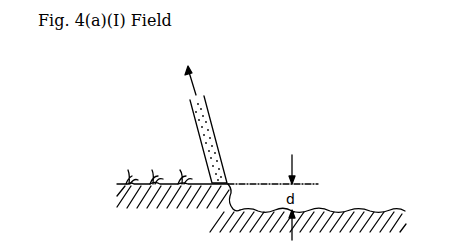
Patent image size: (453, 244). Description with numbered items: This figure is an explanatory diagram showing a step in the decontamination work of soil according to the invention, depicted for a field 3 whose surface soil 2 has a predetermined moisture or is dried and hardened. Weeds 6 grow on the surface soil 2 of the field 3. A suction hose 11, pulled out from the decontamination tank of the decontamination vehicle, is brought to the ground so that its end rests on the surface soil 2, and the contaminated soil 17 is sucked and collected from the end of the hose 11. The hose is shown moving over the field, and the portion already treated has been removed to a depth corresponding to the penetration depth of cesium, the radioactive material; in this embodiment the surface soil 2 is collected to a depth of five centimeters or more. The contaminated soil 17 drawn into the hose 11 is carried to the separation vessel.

The surface soil 2 is at (142, 193).
The field 3 is at (349, 131).
The weeds 6 is at (181, 181).
The suction hose 11 is at (210, 118).
The contaminated soil 17 is at (212, 146).